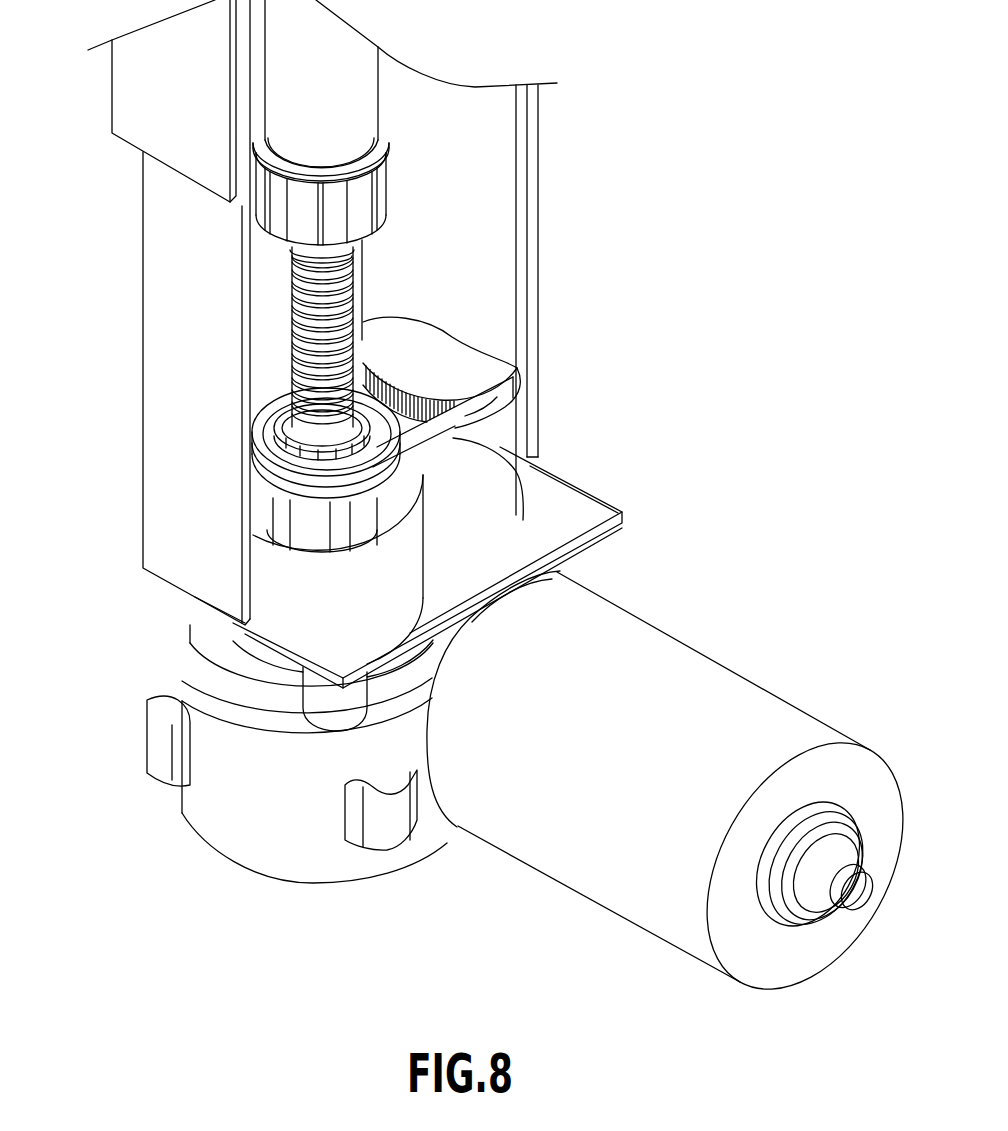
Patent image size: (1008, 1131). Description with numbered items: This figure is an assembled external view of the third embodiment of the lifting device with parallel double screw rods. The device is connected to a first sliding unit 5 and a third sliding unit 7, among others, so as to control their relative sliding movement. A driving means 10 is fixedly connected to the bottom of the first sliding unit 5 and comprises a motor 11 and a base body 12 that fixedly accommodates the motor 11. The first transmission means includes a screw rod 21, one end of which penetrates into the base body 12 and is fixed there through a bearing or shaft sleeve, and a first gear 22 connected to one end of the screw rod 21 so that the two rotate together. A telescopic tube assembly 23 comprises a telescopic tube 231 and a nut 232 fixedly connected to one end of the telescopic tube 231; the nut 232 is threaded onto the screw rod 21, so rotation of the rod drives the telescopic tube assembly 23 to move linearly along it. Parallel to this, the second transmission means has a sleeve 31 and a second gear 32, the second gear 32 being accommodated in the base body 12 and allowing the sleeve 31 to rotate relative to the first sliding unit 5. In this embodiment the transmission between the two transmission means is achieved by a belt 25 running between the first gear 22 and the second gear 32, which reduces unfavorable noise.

The first sliding unit 5 is at (153, 358).
The third sliding unit 7 is at (123, 85).
The driving means 10 is at (163, 856).
The motor 11 is at (695, 660).
The base body 12 is at (250, 857).
The screw rod 21 is at (368, 322).
The first gear 22 is at (258, 428).
The telescopic tube assembly 23 is at (603, 188).
The telescopic tube 231 is at (368, 105).
The nut 232 is at (368, 198).
The belt 25 is at (545, 462).
The sleeve 31 is at (503, 140).
The second gear 32 is at (520, 404).